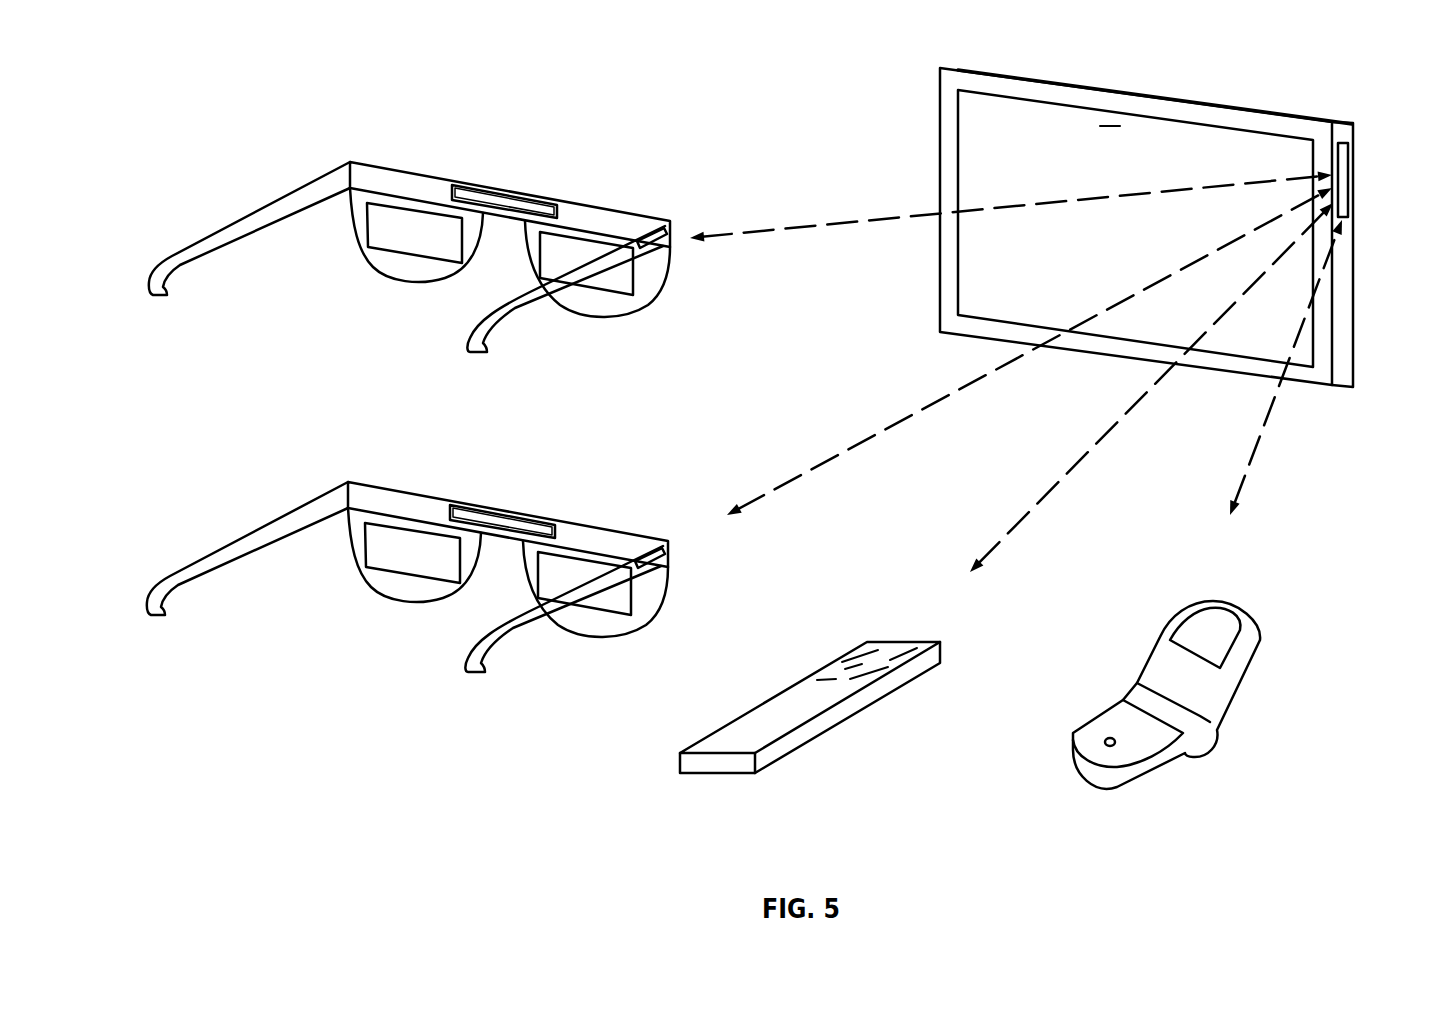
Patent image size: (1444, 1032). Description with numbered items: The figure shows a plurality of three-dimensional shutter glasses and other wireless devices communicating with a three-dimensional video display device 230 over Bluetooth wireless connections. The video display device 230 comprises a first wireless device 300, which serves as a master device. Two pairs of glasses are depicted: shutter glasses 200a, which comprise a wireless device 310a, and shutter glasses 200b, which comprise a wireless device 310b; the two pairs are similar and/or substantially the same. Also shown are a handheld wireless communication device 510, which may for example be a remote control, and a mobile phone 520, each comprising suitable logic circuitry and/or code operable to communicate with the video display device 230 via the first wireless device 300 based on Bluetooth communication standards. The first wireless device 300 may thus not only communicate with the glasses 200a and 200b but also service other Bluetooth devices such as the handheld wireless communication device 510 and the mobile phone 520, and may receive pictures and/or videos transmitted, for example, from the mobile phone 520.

The 3D shutter glasses 200a is at (314, 168).
The 3D shutter glasses 200b is at (312, 488).
The wireless device 310a is at (666, 227).
The wireless device 310b is at (664, 547).
The 3D video display device 230 is at (1178, 91).
The first wireless device 300 is at (1366, 178).
The handheld wireless communication device 510 is at (894, 642).
The mobile phone 520 is at (1205, 600).